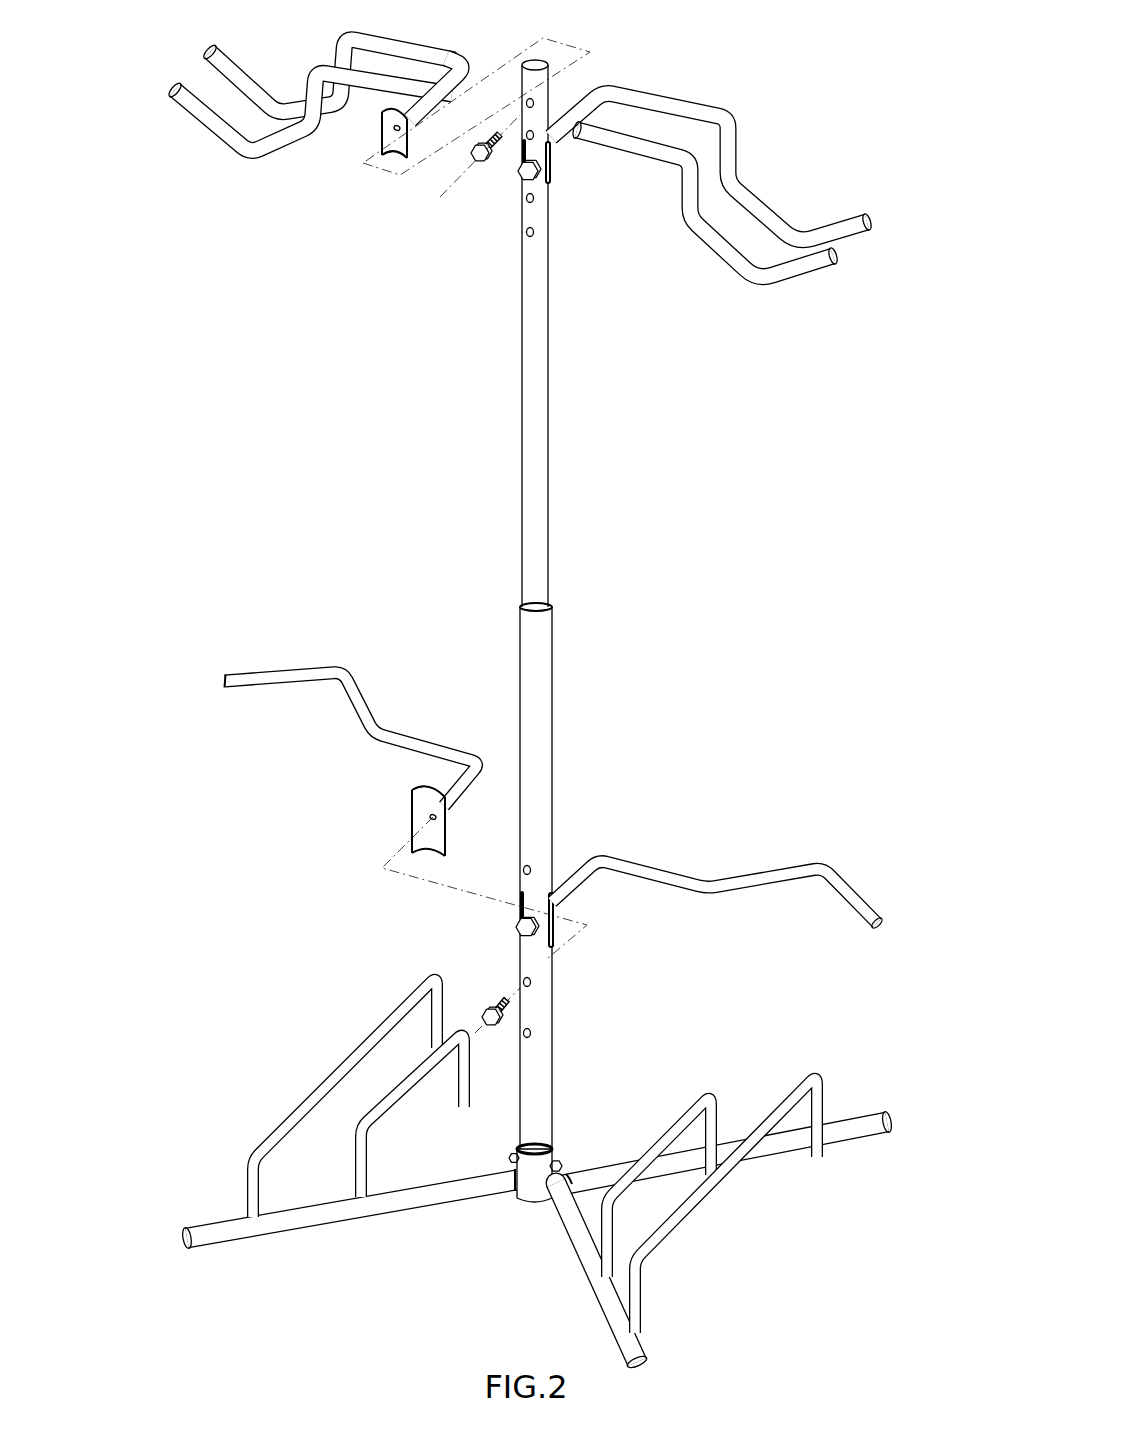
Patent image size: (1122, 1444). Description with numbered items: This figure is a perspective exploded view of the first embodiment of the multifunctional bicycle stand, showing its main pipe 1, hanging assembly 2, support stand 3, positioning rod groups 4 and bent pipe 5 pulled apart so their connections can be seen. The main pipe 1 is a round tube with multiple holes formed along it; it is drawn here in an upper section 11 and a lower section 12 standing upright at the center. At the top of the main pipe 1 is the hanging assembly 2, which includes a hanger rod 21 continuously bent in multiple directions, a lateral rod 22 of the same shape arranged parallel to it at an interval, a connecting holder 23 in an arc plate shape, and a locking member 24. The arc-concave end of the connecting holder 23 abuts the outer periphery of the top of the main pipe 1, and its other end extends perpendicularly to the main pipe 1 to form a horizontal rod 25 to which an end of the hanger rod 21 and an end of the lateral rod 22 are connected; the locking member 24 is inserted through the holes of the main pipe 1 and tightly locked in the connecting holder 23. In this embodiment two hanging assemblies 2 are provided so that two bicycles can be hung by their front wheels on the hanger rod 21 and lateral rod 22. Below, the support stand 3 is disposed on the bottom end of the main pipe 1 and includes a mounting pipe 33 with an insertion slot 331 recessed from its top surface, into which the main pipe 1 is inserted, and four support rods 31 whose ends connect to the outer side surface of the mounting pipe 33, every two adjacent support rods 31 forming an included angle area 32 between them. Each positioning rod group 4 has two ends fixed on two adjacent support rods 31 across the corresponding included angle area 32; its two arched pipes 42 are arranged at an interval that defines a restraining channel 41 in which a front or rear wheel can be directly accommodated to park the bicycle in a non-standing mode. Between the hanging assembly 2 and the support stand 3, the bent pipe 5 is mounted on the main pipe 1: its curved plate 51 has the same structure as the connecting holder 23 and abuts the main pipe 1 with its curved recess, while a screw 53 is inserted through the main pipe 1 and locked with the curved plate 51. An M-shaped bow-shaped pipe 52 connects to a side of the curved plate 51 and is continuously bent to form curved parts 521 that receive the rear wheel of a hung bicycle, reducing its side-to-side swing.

The main pipe 1 is at (618, 605).
The upper post section 11 is at (537, 553).
The lower post section 12 is at (543, 673).
The hanging assembly 2 is at (776, 155).
The hanger rod 21 is at (390, 88).
The lateral rod 22 is at (222, 131).
The connecting holder 23 is at (390, 150).
The locking member 24 is at (472, 163).
The horizontal rod 25 is at (413, 122).
The support stand 3 is at (522, 1117).
The support rods 31 is at (462, 1003).
The included angle area 32 is at (497, 1160).
The mounting pipe 33 is at (537, 1178).
The insertion slot 331 is at (556, 1158).
The positioning rod group 4 is at (553, 1138).
The restraining channel 41 is at (326, 1165).
The arched pipes 42 is at (378, 1038).
The bent pipe 5 is at (535, 763).
The curved plate 51 is at (403, 813).
The bow-shaped pipe 52 is at (353, 707).
The curved part 521 is at (338, 690).
The screw 53 is at (497, 1003).